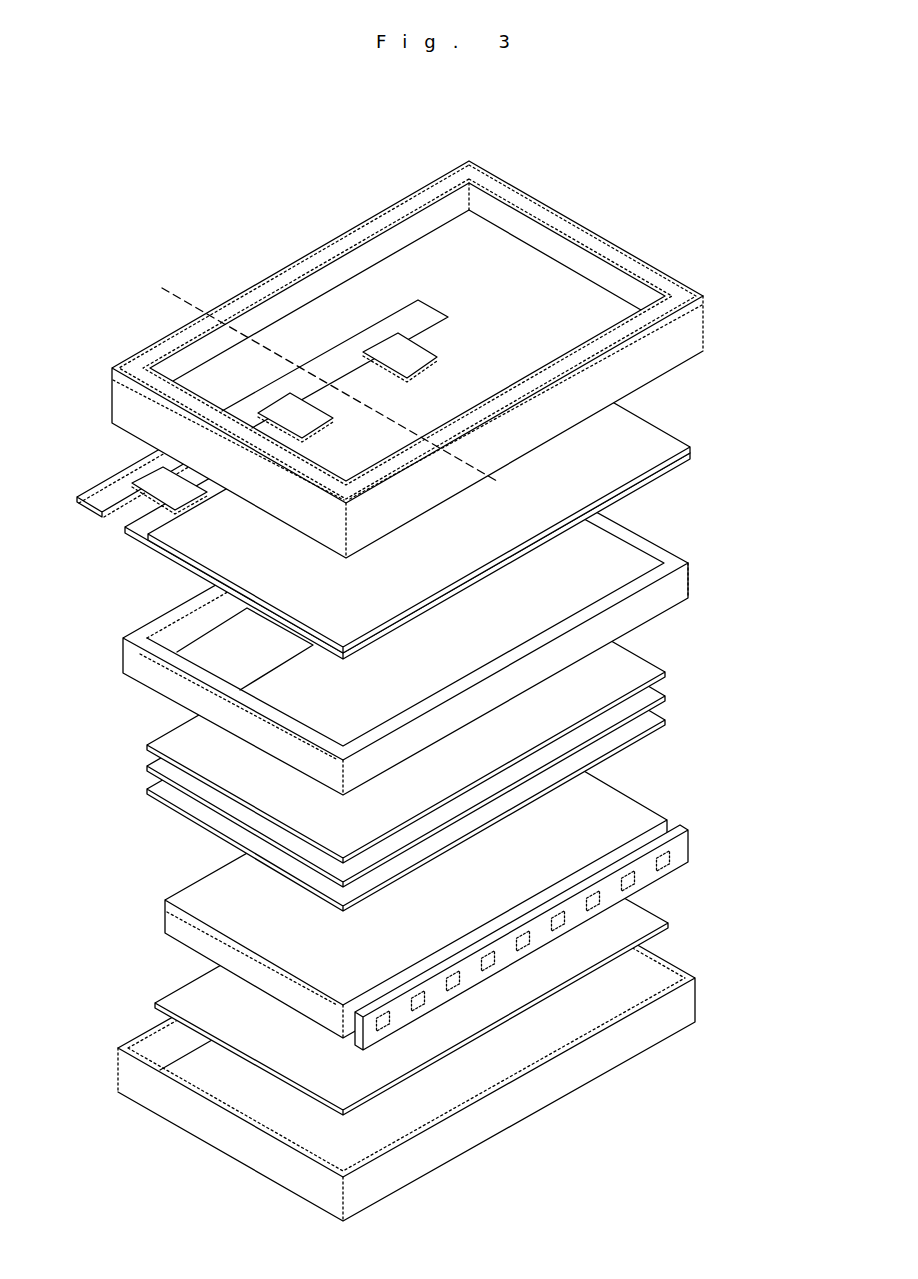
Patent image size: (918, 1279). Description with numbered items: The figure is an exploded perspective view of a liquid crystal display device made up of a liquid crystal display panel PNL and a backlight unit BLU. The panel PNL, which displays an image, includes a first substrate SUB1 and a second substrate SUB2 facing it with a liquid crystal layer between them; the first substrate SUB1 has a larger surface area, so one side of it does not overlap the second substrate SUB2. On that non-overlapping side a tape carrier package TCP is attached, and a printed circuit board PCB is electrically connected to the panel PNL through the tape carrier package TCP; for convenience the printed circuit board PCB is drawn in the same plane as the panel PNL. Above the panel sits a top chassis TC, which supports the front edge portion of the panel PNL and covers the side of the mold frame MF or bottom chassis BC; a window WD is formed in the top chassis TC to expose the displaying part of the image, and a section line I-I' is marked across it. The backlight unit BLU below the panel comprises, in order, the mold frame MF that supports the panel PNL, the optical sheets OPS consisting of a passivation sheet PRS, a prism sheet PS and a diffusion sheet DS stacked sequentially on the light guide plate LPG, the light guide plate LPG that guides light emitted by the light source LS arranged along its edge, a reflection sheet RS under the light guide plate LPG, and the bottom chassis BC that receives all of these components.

The top chassis TC is at (437, 359).
The window WD is at (510, 274).
The tape carrier package TCP is at (163, 493).
The printed circuit board PCB is at (97, 495).
The liquid crystal display panel PNL is at (481, 493).
The first substrate SUB1 is at (690, 459).
The second substrate SUB2 is at (690, 450).
The backlight unit BLU is at (483, 831).
The mold frame MF is at (442, 618).
The optical sheets OPS is at (472, 735).
The passivation sheet PRS is at (665, 673).
The prism sheet PS is at (665, 697).
The diffusion sheet DS is at (665, 721).
The light guide plate LPG is at (648, 815).
The light source LS is at (682, 852).
The reflection sheet RS is at (668, 926).
The bottom chassis BC is at (682, 1002).
The section line I is at (502, 493).
The section line I' is at (319, 384).